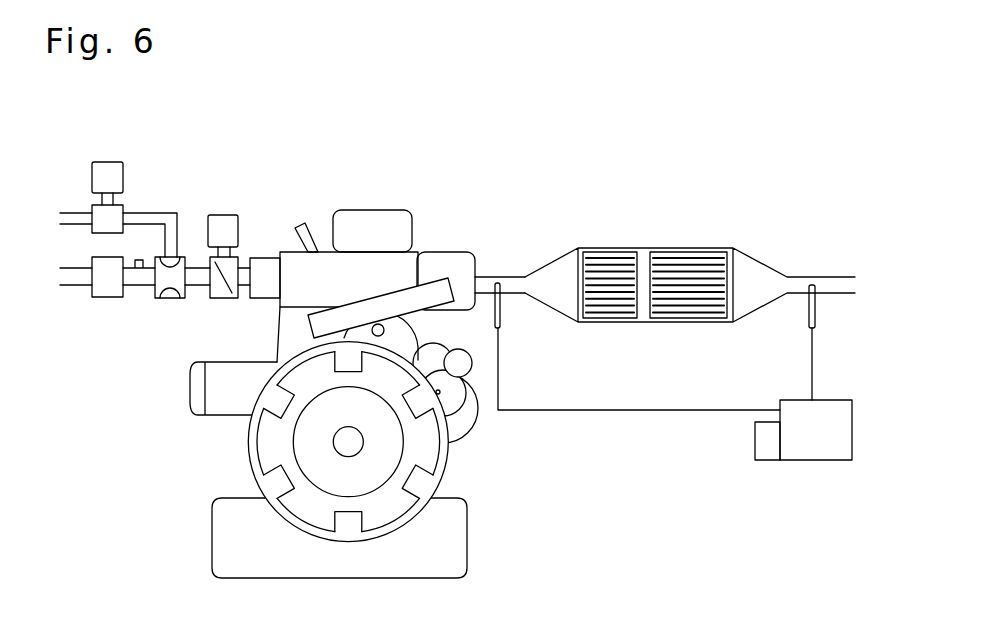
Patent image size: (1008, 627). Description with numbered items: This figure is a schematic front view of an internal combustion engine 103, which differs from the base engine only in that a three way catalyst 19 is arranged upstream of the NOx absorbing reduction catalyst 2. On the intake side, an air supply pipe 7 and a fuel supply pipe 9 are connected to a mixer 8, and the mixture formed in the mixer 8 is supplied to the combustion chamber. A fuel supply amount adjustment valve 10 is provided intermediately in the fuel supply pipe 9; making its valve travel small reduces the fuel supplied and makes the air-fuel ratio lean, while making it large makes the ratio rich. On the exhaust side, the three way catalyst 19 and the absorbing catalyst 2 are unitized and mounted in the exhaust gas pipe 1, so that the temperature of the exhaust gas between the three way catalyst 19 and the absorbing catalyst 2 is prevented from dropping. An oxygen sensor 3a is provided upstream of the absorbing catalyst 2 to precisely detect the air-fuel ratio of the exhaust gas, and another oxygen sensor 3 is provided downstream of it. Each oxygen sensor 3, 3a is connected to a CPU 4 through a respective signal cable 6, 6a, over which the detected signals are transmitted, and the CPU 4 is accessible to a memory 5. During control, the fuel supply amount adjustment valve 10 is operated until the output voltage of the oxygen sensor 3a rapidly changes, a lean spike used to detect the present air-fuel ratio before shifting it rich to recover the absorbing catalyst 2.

The internal combustion engine 103 is at (276, 167).
The fuel supply amount adjustment valve 10 is at (115, 162).
The fuel supply pipe 9 is at (143, 212).
The air supply pipe 7 is at (140, 287).
The mixer 8 is at (170, 300).
The exhaust gas pipe 1 is at (498, 277).
The NOx absorbing reduction catalyst 2 is at (700, 262).
The three way catalyst 19 is at (613, 263).
The oxygen sensor 3a is at (507, 322).
The signal cable 6a is at (603, 410).
The oxygen sensor 3 is at (815, 317).
The signal cable 6 is at (813, 373).
The CPU 4 is at (823, 449).
The memory 5 is at (755, 437).